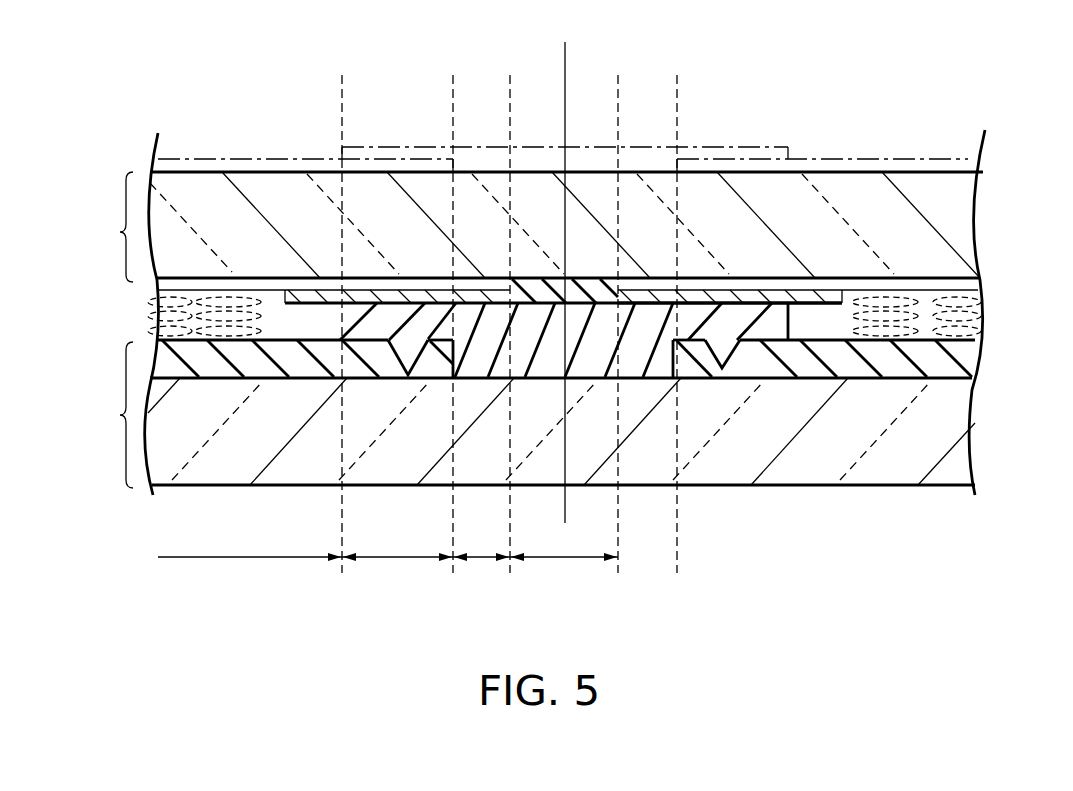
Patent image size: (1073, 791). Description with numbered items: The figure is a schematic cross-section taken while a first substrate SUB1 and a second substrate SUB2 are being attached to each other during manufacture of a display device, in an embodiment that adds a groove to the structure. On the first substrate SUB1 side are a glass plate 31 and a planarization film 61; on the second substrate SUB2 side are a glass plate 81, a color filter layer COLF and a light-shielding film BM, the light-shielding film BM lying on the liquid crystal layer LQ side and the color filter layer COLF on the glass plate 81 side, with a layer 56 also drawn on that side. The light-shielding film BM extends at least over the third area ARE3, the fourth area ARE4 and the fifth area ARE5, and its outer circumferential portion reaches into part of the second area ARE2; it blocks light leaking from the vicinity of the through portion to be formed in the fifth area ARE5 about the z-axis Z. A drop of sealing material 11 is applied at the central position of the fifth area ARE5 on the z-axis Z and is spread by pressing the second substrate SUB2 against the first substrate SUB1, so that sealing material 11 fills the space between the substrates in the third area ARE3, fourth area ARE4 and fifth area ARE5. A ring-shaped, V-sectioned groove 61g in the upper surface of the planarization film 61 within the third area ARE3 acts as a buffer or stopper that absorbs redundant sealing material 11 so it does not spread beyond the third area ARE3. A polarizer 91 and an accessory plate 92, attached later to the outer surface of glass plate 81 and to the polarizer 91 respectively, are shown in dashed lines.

The glass plate 81 is at (960, 229).
The glass plate 31 is at (958, 421).
The planarization film 61 is at (960, 358).
The groove 61g is at (403, 345).
The liquid crystal layer LQ is at (973, 315).
The light-shielding film BM is at (711, 293).
The color filter layer COLF is at (794, 293).
The overcoat / filling layer 56 is at (820, 327).
The sealing material 11 is at (656, 345).
The polarizer 91 is at (303, 156).
The accessory plate 92 is at (482, 157).
The z-axis Z is at (566, 267).
The second substrate SUB2 is at (96, 227).
The first substrate SUB1 is at (96, 415).
The second area ARE2 is at (250, 573).
The third area ARE3 is at (397, 573).
The fourth area ARE4 is at (481, 558).
The fifth area ARE5 is at (564, 589).